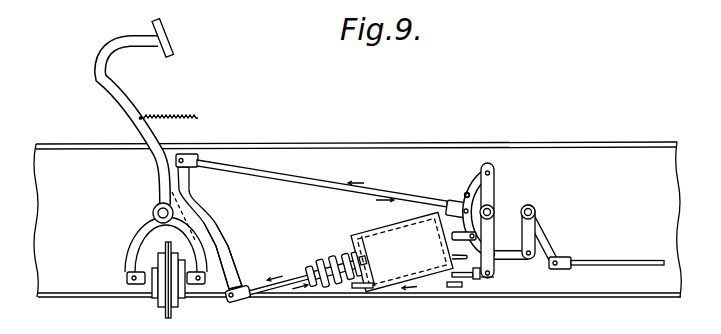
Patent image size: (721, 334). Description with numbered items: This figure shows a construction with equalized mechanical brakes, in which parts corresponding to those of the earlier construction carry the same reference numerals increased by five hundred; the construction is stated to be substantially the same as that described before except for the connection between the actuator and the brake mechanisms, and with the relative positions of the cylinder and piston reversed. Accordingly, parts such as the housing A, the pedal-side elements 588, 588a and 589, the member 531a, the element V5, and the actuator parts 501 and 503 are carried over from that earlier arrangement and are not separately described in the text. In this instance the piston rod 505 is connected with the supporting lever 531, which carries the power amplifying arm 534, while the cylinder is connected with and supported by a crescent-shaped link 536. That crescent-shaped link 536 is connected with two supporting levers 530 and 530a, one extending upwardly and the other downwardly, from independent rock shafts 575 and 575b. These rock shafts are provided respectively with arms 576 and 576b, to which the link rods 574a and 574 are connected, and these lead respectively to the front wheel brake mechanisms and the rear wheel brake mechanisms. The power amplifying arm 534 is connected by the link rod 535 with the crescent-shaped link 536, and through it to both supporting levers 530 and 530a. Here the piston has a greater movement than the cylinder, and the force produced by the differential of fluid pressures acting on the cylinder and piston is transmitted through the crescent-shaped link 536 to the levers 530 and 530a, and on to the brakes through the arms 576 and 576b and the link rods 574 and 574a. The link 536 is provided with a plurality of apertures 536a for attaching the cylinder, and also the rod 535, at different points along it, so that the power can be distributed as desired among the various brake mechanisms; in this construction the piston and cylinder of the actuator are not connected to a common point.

The housing A is at (590, 146).
The foot pedal 588 is at (129, 107).
The spring 589 is at (168, 109).
The power amplifying arm 534 is at (185, 191).
The supporting lever 531 is at (219, 256).
The yoke 531a is at (127, 255).
The pedal arm extension 588a is at (197, 250).
The valve roller V5 is at (164, 241).
The link rod 535 is at (333, 189).
The solenoid 501 is at (377, 232).
The solenoid base 503 is at (372, 292).
The piston rod 505 is at (273, 293).
The crescent-shaped link 536 is at (472, 176).
The apertures 536a is at (465, 194).
The supporting lever 530 is at (491, 187).
The rock shaft 575 is at (495, 207).
The rock shaft 575b is at (536, 207).
The supporting lever 530a is at (533, 233).
The arm 576b is at (553, 250).
The link rod 574 is at (614, 265).
The link rod 574a is at (456, 278).
The arm 576 is at (494, 277).